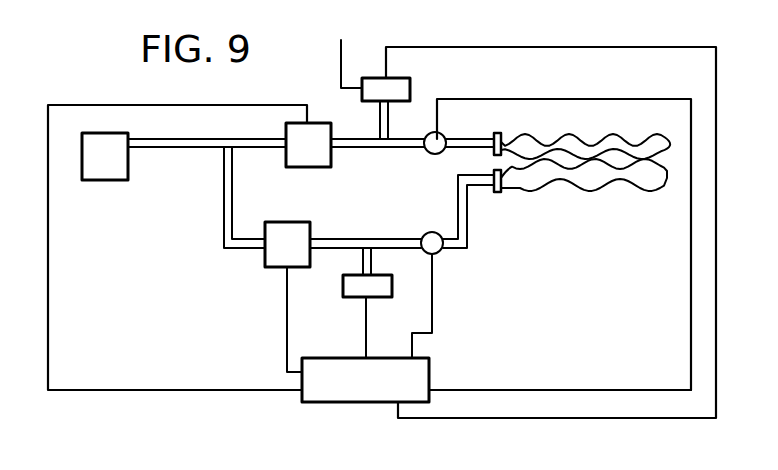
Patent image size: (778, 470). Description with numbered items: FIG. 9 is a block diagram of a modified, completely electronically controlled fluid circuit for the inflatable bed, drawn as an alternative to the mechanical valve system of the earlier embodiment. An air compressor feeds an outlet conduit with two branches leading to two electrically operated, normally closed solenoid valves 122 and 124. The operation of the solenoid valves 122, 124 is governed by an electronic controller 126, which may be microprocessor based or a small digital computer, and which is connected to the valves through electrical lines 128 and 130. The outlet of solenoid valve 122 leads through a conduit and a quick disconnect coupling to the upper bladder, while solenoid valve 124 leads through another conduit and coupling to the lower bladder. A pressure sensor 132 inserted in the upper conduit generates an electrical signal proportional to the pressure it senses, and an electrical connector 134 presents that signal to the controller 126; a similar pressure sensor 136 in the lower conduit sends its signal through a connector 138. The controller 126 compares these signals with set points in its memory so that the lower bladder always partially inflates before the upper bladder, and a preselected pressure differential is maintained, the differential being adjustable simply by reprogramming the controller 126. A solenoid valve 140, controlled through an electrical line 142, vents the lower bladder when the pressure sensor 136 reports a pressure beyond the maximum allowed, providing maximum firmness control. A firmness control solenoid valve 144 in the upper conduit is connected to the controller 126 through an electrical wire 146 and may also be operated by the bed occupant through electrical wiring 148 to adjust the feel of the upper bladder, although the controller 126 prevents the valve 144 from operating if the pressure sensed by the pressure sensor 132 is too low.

The solenoid valve 122 is at (305, 168).
The solenoid valve 124 is at (297, 222).
The electronic controller 126 is at (430, 376).
The electrical line 128 is at (286, 296).
The electrical line 130 is at (130, 105).
The pressure sensor 132 is at (441, 132).
The electrical connector 134 is at (505, 99).
The pressure sensor 136 is at (427, 233).
The connector 138 is at (433, 303).
The solenoid valve 140 is at (343, 288).
The electrical line 142 is at (366, 325).
The firmness control solenoid valve 144 is at (412, 90).
The electrical wire 146 is at (640, 48).
The electrical wiring 148 is at (340, 50).